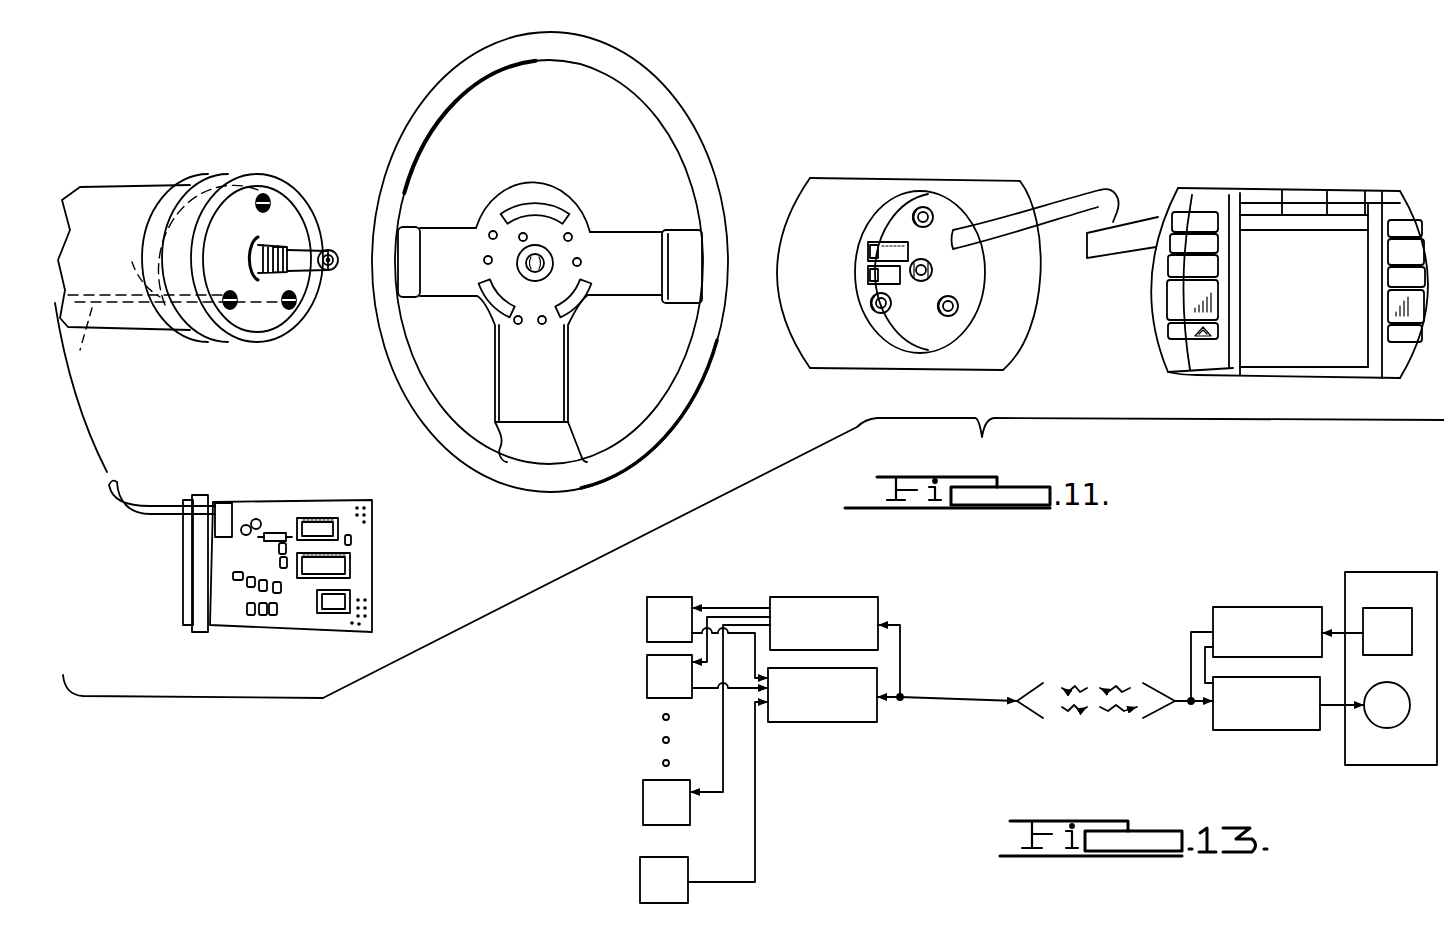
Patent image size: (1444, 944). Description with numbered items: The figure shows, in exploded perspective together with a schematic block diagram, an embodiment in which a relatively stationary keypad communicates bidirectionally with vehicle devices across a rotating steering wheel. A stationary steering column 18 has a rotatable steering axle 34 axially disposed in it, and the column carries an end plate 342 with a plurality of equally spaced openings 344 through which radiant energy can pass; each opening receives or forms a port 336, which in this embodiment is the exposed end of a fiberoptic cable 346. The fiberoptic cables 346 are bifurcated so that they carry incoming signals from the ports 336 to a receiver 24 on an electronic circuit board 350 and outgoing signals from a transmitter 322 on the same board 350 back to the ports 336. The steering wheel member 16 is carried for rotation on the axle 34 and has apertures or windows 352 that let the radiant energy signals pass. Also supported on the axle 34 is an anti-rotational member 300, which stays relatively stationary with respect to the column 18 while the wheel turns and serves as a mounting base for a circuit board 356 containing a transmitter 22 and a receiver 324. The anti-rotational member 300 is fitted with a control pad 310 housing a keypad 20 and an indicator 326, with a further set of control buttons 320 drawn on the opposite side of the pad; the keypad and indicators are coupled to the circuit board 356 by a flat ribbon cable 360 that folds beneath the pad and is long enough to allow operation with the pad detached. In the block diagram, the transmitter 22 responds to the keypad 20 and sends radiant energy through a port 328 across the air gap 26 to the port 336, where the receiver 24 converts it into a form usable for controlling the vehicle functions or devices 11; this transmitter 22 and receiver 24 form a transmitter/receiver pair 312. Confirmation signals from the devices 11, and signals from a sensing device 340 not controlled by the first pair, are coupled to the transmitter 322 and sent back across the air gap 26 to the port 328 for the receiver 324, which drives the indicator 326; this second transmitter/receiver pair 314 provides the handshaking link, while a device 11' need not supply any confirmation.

In FIG. 11, the steering wheel member 16 is at (669, 83).
In FIG. 11, the stationary steering column 18 is at (130, 187).
In FIG. 11, the rotatable steering axle 34 is at (330, 250).
In FIG. 11, the port 336 is at (295, 305).
In FIG. 13, the port 336 is at (1038, 688).
In FIG. 11, the openings 344 is at (232, 308).
In FIG. 11, the end plate 342 is at (265, 317).
In FIG. 11, the fiberoptic cables 346 is at (107, 339).
In FIG. 11, the apertures or windows 352 is at (531, 206).
In FIG. 11, the anti-rotational member 300 is at (831, 171).
In FIG. 11, the transmitter 22 is at (889, 240).
In FIG. 13, the transmitter 22 is at (1277, 607).
In FIG. 11, the circuit board 356 is at (960, 196).
In FIG. 11, the flat ribbon cable 360 is at (1108, 188).
In FIG. 11, the control pad 310 is at (1305, 191).
In FIG. 13, the control pad 310 is at (1378, 571).
In FIG. 11, the keypad 20 is at (1162, 310).
In FIG. 13, the keypad 20 is at (1392, 609).
In FIG. 11, the right keypad 320 is at (1408, 325).
In FIG. 11, the port 328 is at (882, 318).
In FIG. 13, the port 328 is at (1152, 688).
In FIG. 11, the receiver 324 is at (893, 286).
In FIG. 13, the receiver 324 is at (1247, 731).
In FIG. 11, the transmitter 322 is at (315, 518).
In FIG. 13, the transmitter 322 is at (800, 722).
In FIG. 11, the receiver 24 is at (308, 580).
In FIG. 13, the receiver 24 is at (820, 597).
In FIG. 11, the electronic circuit board 350 is at (373, 558).
In FIG. 13, the vehicle functions or devices 11 is at (675, 597).
In FIG. 13, the device 11' is at (630, 792).
In FIG. 13, the device 340 is at (640, 880).
In FIG. 13, the transmitter/receiver pair 312 is at (1197, 618).
In FIG. 13, the second transmitter/receiver pair 314 is at (1200, 732).
In FIG. 13, the air gap 26 is at (1099, 713).
In FIG. 13, the indicator 326 is at (1368, 725).